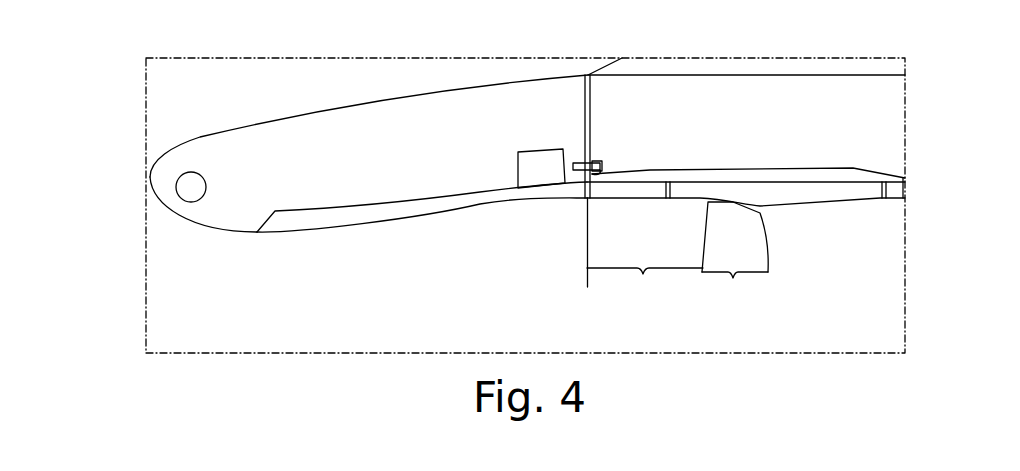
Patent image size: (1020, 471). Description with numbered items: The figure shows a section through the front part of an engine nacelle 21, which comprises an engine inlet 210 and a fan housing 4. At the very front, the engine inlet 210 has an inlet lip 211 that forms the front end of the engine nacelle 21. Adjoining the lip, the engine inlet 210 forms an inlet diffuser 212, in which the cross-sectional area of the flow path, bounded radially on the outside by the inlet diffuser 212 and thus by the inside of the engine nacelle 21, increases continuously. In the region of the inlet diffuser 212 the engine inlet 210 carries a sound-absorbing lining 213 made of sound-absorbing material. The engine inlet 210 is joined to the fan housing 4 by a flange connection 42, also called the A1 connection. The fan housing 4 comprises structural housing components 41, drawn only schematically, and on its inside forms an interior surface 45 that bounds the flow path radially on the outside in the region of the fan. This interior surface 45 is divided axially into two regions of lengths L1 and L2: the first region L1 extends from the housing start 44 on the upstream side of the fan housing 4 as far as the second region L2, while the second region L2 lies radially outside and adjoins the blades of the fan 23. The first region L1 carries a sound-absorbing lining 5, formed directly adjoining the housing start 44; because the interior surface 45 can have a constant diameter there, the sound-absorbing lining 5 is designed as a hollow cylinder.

The engine nacelle 21 is at (259, 140).
The inlet lip 211 is at (150, 177).
The engine inlet 210 is at (213, 227).
The sound-absorbing lining 213 is at (308, 222).
The inlet diffuser 212 is at (522, 202).
The flange connection 42 is at (598, 165).
The housing start 44 is at (593, 212).
The fan housing 4 is at (734, 163).
The structural housing components 41 is at (787, 182).
The sound-absorbing lining 5 is at (656, 185).
The interior surface 45 is at (653, 183).
The fan 23 is at (757, 242).
The first region L1 is at (645, 286).
The second region L2 is at (735, 289).